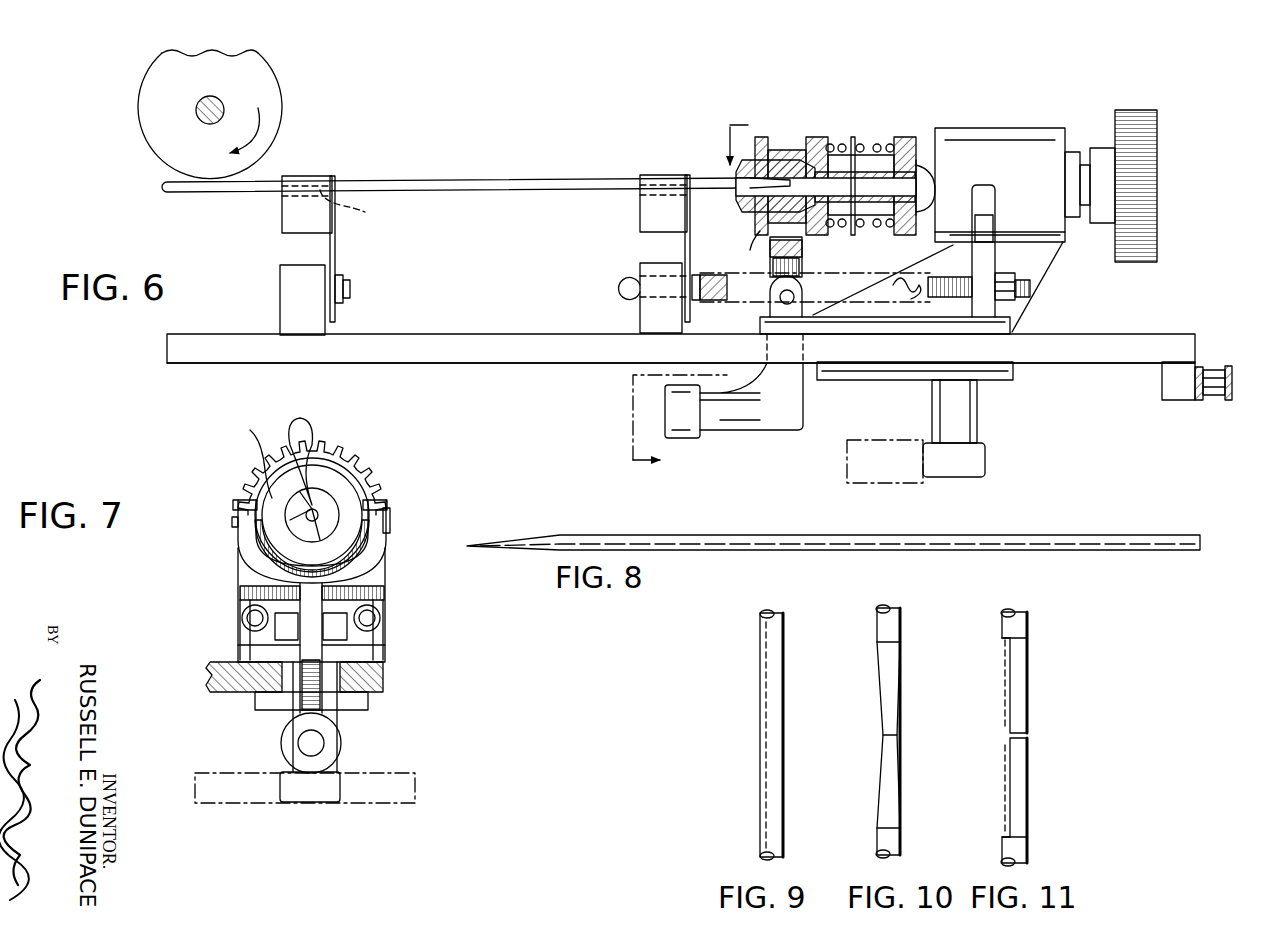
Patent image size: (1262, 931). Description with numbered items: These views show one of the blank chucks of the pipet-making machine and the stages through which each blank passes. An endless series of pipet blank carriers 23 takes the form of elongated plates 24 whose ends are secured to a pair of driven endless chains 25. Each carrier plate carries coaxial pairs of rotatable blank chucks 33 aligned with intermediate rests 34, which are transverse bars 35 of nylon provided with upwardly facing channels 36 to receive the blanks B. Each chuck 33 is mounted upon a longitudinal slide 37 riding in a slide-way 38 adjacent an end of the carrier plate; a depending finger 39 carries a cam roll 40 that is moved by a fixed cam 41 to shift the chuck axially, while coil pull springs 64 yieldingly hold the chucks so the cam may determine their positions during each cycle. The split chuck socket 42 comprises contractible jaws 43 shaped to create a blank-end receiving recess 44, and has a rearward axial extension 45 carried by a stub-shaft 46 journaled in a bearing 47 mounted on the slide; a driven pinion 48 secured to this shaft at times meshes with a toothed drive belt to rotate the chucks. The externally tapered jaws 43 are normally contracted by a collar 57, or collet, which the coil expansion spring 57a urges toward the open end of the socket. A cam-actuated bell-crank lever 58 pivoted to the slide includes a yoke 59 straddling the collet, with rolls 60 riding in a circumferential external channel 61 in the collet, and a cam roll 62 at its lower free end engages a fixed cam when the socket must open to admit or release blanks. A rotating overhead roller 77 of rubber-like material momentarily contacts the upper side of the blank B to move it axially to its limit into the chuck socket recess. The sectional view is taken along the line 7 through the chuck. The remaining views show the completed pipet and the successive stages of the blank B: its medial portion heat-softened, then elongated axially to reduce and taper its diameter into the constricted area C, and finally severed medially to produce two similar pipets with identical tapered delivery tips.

In FIG. 6, the rotating overhead roller 77 is at (268, 130).
In FIG. 6, the transverse bars 35 is at (293, 205).
In FIG. 6, the intermediate rests 34 is at (345, 228).
In FIG. 6, the channels 36 is at (363, 210).
In FIG. 6, the pipet blank carriers 23 is at (535, 333).
In FIG. 6, the elongated plates 24 is at (512, 355).
In FIG. 7, the elongated plates 24 is at (215, 680).
In FIG. 6, the coil pull springs 64 is at (713, 302).
In FIG. 7, the coil pull springs 64 is at (243, 612).
In FIG. 6, the rearward axial extension 45 is at (850, 222).
In FIG. 6, the split chuck socket 42 is at (760, 137).
In FIG. 7, the split chuck socket 42 is at (332, 490).
In FIG. 6, the blank-end receiving recess 44 is at (788, 160).
In FIG. 7, the blank-end receiving recess 44 is at (318, 512).
In FIG. 6, the contractible jaws 43 is at (745, 200).
In FIG. 7, the contractible jaws 43 is at (294, 447).
In FIG. 6, the circumferential external channel 61 is at (780, 148).
In FIG. 6, the coil expansion spring 57a is at (840, 145).
In FIG. 6, the rotatable blank chucks 33 is at (866, 146).
In FIG. 7, the rotatable blank chucks 33 is at (232, 535).
In FIG. 6, the stub-shaft 46 is at (928, 150).
In FIG. 6, the bearing 47 is at (1003, 138).
In FIG. 6, the driven pinion 48 is at (1130, 120).
In FIG. 7, the driven pinion 48 is at (383, 462).
In FIG. 6, the longitudinal slide 37 is at (1015, 330).
In FIG. 7, the longitudinal slide 37 is at (340, 655).
In FIG. 6, the cam-actuated bell-crank lever 58 is at (795, 268).
In FIG. 7, the cam-actuated bell-crank lever 58 is at (330, 600).
In FIG. 6, the yoke 59 is at (768, 248).
In FIG. 7, the yoke 59 is at (372, 548).
In FIG. 6, the collar 57 is at (730, 251).
In FIG. 7, the collar 57 is at (307, 496).
In FIG. 6, the cam roll 62 is at (690, 425).
In FIG. 7, the cam roll 62 is at (335, 748).
In FIG. 6, the section line 7— 7 is at (676, 294).
In FIG. 6, the depending finger 39 is at (960, 395).
In FIG. 7, the depending finger 39 is at (335, 717).
In FIG. 6, the cam roll 40 is at (965, 462).
In FIG. 7, the cam roll 40 is at (330, 800).
In FIG. 6, the fixed cam 41 is at (898, 445).
In FIG. 7, the fixed cam 41 is at (400, 795).
In FIG. 6, the driven endless chains 25 is at (1210, 400).
In FIG. 7, the rolls 60 is at (250, 480).
In FIG. 7, the slide-way 38 is at (345, 672).
In FIG. 9, the pipet blank B is at (760, 812).
In FIG. 11, the pipet blank B is at (1030, 630).
In FIG. 10, the constricted area C is at (898, 695).